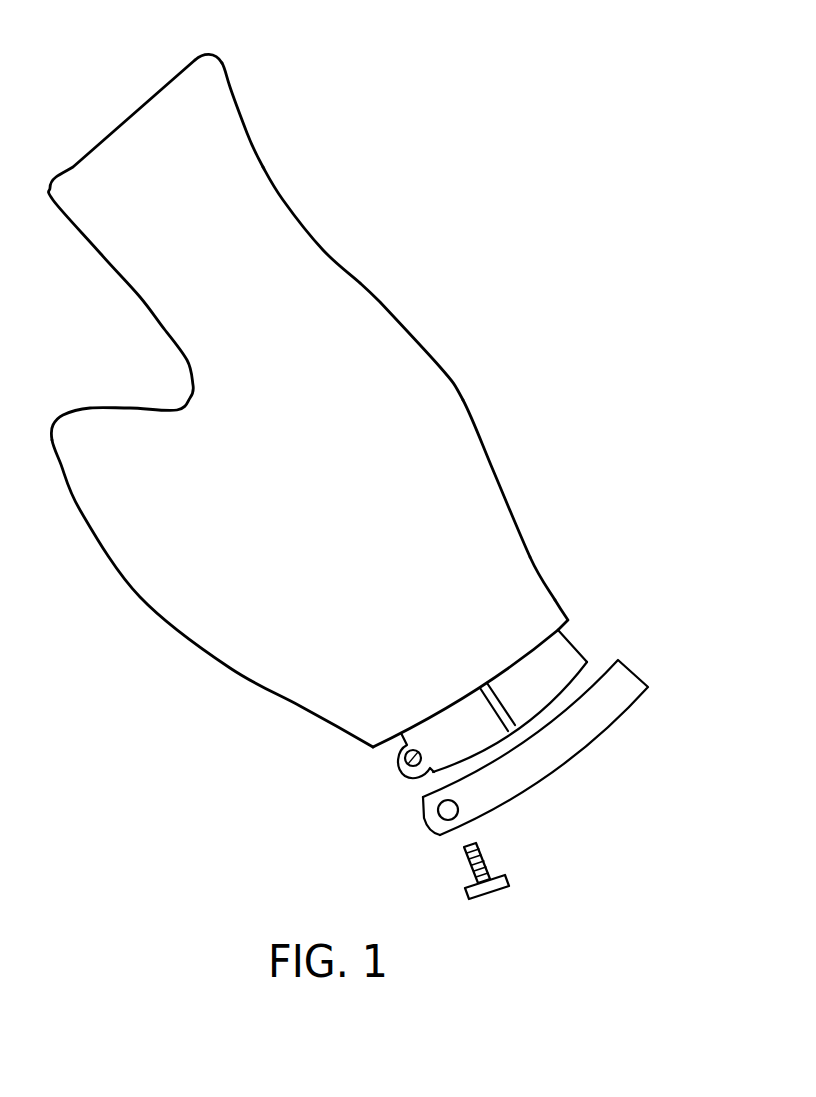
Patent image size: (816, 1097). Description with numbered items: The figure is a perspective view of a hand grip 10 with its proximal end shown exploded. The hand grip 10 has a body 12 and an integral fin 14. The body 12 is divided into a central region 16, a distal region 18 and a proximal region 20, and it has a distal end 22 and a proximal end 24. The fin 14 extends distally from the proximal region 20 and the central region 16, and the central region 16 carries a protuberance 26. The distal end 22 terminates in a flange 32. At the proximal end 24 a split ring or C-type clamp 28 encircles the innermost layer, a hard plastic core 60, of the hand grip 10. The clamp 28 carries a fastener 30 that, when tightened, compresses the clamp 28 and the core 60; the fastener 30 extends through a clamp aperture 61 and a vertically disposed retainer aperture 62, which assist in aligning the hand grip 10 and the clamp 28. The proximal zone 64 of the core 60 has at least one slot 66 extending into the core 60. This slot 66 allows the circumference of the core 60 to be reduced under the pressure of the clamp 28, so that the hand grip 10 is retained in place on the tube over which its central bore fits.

The hand grip 10 is at (446, 240).
The body 12 is at (472, 490).
The fin 14 is at (193, 585).
The central region 16 is at (310, 538).
The distal region 18 is at (240, 185).
The proximal region 20 is at (500, 580).
The distal end 22 is at (180, 97).
The proximal end 24 is at (540, 612).
The protuberance 26 is at (435, 380).
The clamp 28 is at (623, 682).
The fastener 30 is at (460, 862).
The flange 32 is at (217, 100).
The core 60 is at (568, 658).
The clamp aperture 61 is at (423, 820).
The retainer aperture 62 is at (397, 772).
The proximal zone 64 is at (533, 700).
The slot 66 is at (507, 714).